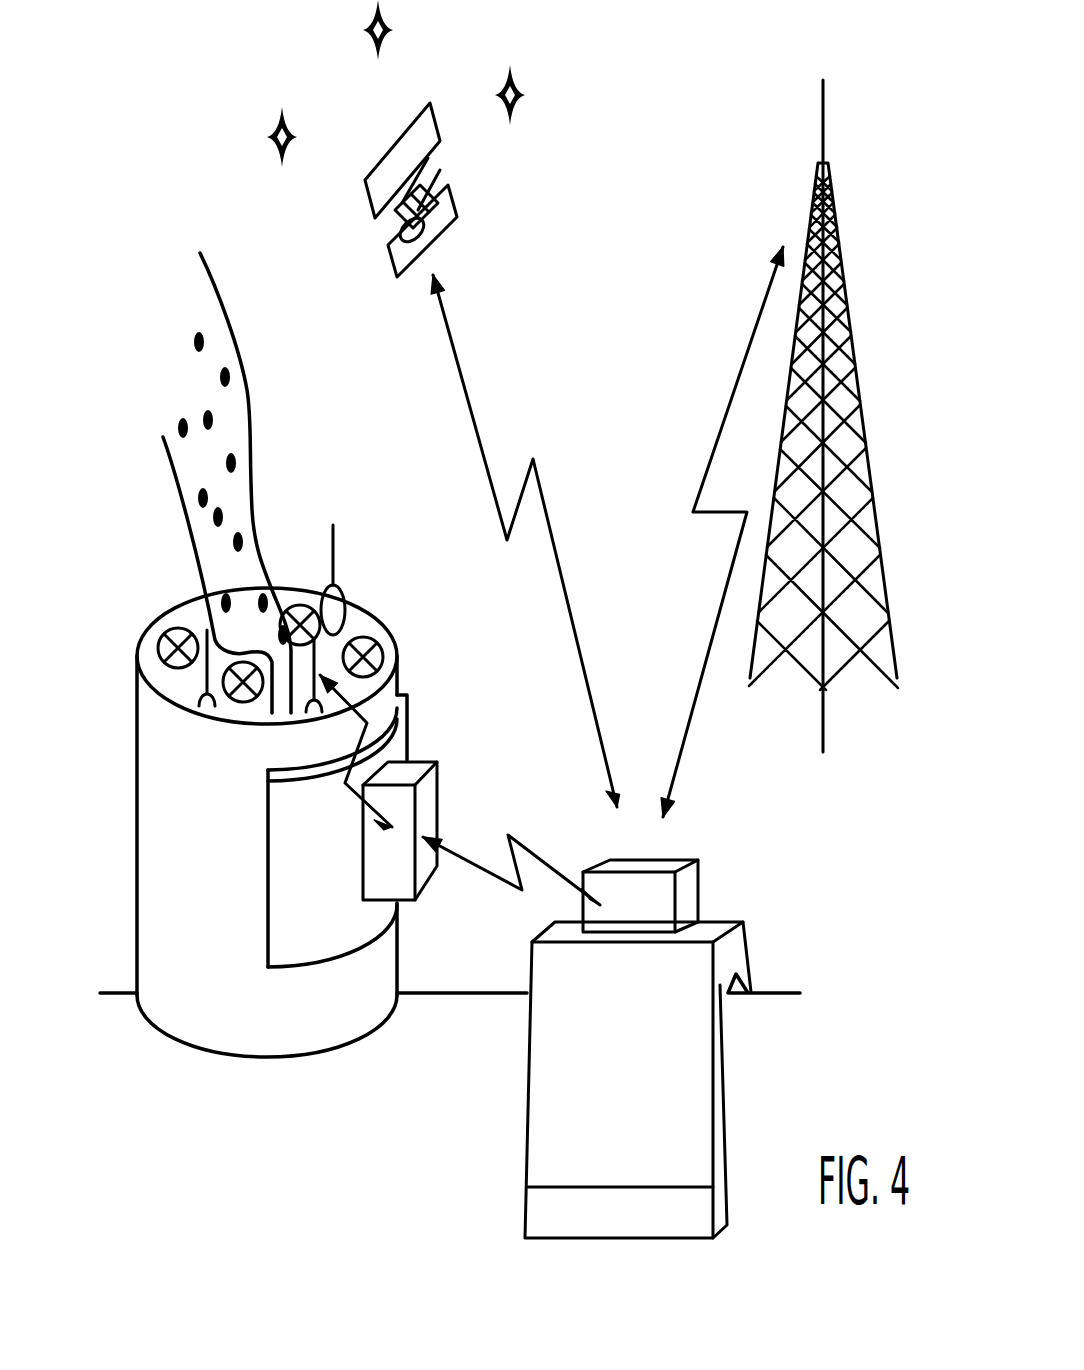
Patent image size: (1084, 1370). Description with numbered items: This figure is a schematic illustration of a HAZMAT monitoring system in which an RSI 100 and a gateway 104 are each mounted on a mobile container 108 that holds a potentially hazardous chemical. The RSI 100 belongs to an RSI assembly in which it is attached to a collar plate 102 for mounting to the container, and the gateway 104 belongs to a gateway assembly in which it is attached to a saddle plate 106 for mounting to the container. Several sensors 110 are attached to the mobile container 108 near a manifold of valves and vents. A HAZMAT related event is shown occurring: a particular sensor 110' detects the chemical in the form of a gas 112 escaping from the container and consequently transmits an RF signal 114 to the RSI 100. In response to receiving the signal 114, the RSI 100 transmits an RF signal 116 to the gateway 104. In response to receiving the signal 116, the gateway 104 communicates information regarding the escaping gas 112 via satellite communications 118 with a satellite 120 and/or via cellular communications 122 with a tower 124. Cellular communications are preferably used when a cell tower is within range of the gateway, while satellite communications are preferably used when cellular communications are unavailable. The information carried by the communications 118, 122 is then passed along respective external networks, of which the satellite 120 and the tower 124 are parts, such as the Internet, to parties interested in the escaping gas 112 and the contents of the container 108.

The RSI 100 is at (428, 791).
The collar plate 102 is at (278, 937).
The gateway 104 is at (690, 890).
The saddle plate 106 is at (543, 1142).
The mobile container 108 is at (342, 1146).
The sensors 110 is at (289, 688).
The sensor 110' is at (298, 750).
The gas 112 is at (222, 314).
The RF signal 114 is at (345, 800).
The RF signal 116 is at (462, 858).
The satellite communications 118 is at (553, 532).
The satellite 120 is at (398, 258).
The cellular communications 122 is at (737, 372).
The tower 124 is at (820, 116).